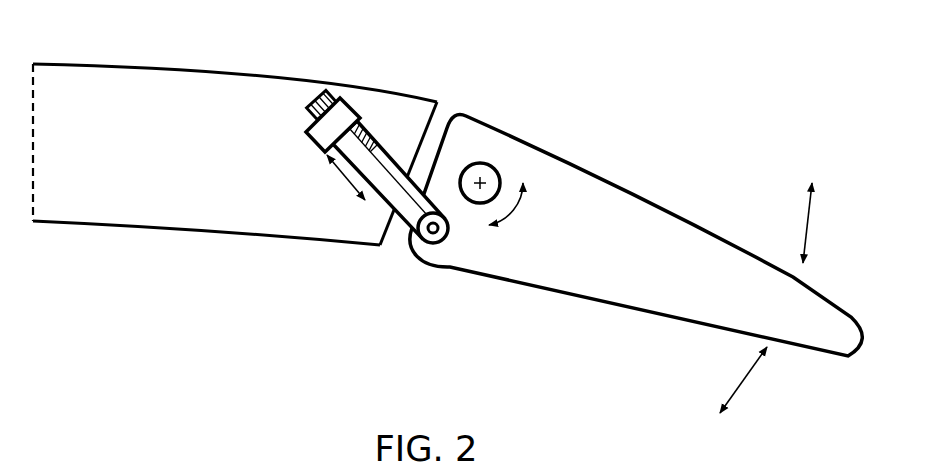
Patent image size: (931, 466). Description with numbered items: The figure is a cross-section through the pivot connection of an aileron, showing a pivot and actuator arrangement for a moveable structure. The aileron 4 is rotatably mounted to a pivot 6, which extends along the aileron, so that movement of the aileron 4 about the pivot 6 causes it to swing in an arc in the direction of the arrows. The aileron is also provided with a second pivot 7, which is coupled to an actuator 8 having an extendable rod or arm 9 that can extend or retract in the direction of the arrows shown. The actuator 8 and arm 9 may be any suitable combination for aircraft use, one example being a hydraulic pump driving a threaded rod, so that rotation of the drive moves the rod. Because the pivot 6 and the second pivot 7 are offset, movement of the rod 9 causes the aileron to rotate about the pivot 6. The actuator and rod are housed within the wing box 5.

The aileron 4 is at (663, 212).
The wing box 5 is at (122, 85).
The pivot 6 is at (490, 170).
The second pivot 7 is at (437, 242).
The actuator 8 is at (338, 115).
The extendable rod or arm 9 is at (393, 197).